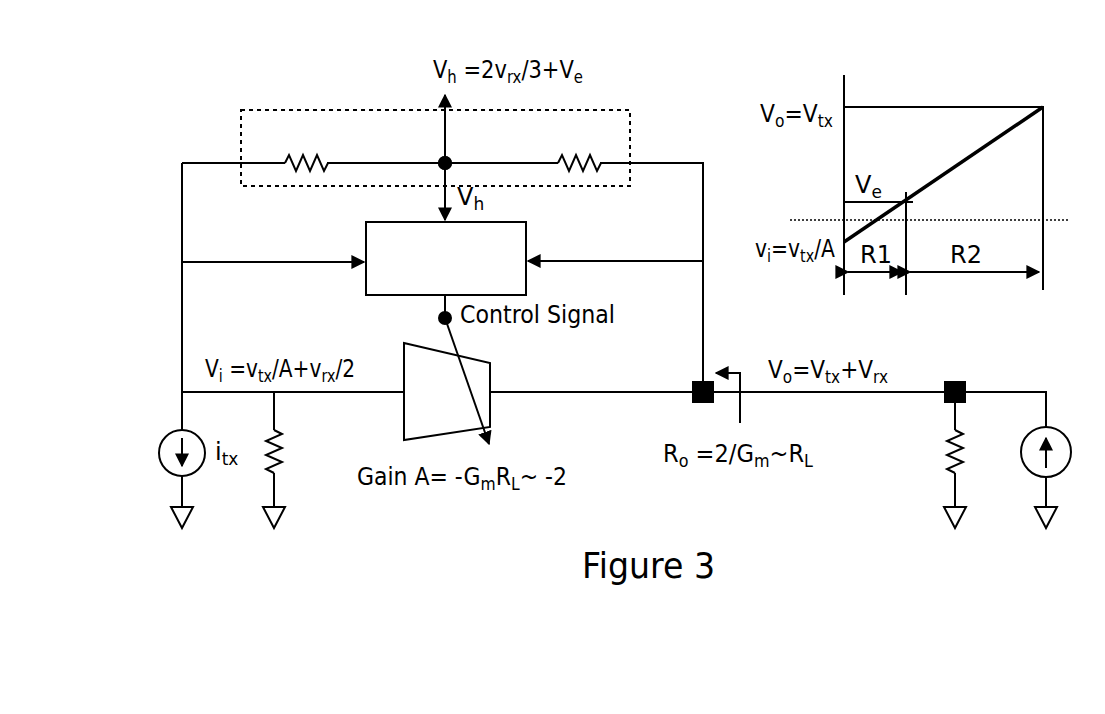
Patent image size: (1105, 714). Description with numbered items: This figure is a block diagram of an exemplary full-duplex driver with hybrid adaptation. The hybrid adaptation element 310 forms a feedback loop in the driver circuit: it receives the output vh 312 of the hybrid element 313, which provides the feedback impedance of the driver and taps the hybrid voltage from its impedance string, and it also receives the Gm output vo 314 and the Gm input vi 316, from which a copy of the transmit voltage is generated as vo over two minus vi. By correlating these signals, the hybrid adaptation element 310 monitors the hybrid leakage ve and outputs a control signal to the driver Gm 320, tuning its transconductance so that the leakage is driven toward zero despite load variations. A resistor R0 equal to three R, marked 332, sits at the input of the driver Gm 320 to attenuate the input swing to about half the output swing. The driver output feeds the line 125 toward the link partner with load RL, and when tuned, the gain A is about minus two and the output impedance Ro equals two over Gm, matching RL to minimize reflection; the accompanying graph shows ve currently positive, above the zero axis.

The hybrid adaptation (HA) element 310 is at (517, 290).
The output vh of the hybrid element 312 is at (450, 160).
The hybrid element 313 is at (615, 110).
The Gm output vo 314 is at (625, 243).
The Gm input vi 316 is at (302, 250).
The driver Gm 320 is at (492, 373).
The resistor R0 332 is at (305, 467).
The line 125 is at (920, 360).